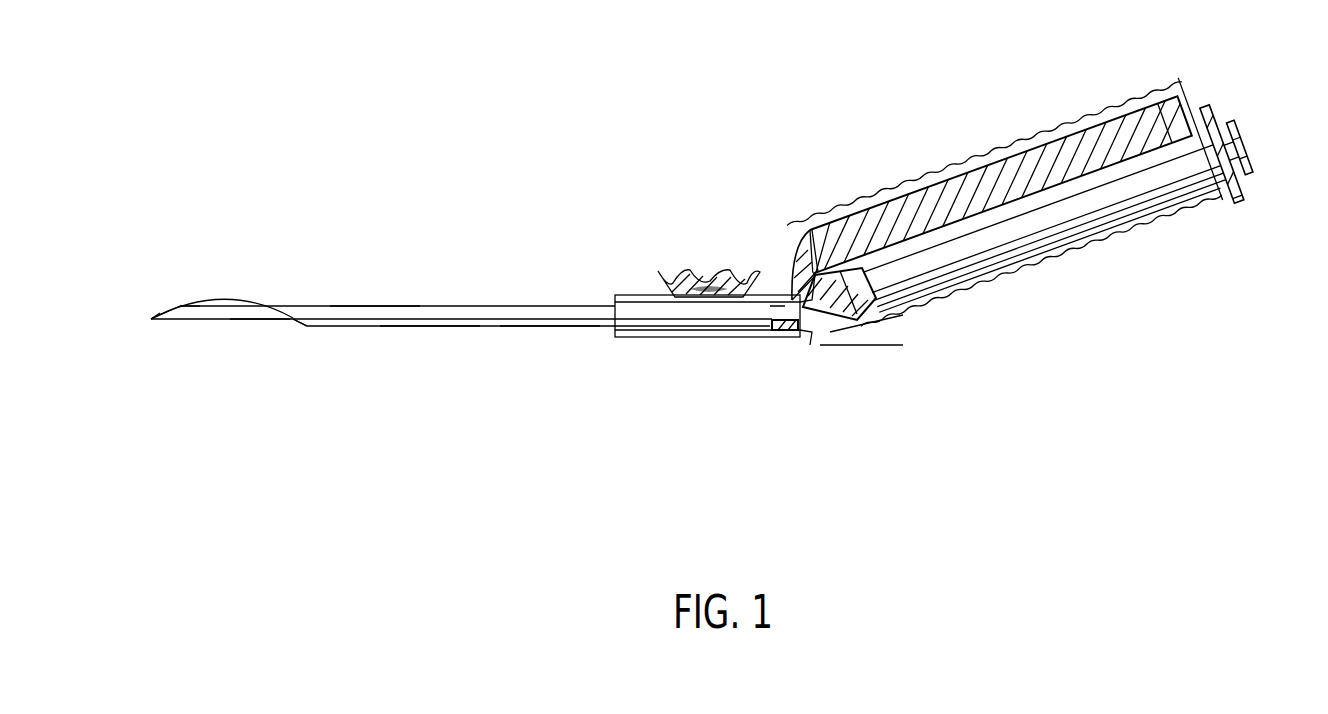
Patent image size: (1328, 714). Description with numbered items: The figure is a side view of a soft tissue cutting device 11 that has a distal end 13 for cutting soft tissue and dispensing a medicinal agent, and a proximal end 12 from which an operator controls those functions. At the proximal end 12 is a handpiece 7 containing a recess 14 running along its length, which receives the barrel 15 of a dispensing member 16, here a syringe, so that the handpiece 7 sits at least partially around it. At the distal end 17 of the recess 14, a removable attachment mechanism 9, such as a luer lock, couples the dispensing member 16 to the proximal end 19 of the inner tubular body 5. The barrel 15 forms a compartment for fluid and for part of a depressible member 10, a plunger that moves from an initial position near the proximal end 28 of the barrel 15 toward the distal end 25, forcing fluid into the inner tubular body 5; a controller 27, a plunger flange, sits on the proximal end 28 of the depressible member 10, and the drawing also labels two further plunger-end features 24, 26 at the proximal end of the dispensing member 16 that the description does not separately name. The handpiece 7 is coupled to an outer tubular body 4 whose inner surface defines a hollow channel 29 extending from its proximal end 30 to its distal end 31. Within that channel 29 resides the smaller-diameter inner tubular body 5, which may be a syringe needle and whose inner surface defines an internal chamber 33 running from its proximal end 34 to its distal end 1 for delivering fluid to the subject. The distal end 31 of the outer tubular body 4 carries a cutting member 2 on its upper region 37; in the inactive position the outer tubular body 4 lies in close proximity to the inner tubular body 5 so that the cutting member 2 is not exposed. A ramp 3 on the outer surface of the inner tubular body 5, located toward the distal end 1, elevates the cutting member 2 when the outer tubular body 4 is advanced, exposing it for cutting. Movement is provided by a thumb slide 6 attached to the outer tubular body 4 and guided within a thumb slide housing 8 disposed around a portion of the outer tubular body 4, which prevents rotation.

The distal end 1 is at (147, 328).
The cutting member 2 is at (274, 306).
The ramp 3 is at (227, 300).
The outer tubular body 4 is at (433, 328).
The inner tubular body 5 is at (263, 322).
The thumb slide 6 is at (713, 270).
The handpiece 7 is at (959, 170).
The thumb slide housing 8 is at (700, 338).
The attachment mechanism 9 is at (832, 318).
The depressible member 10 is at (1012, 238).
The soft tissue cutting device 11 is at (616, 144).
The proximal end 12 is at (1220, 83).
The distal end 13 is at (148, 309).
The recess 14 is at (1150, 125).
The barrel 15 is at (1118, 135).
The dispensing member 16 is at (1142, 204).
The distal end 17 is at (832, 280).
The proximal end 19 is at (793, 290).
The thumb press 24 is at (1253, 163).
The distal end 25 is at (871, 346).
The plunger end 26 is at (1217, 190).
The controller 27 is at (1250, 184).
The proximal end 28 is at (1238, 129).
The hollow channel 29 is at (559, 328).
The proximal end 30 is at (780, 302).
The distal end 31 is at (297, 322).
The internal chamber 33 is at (190, 307).
The proximal end 34 is at (797, 322).
The upper region 37 is at (372, 306).